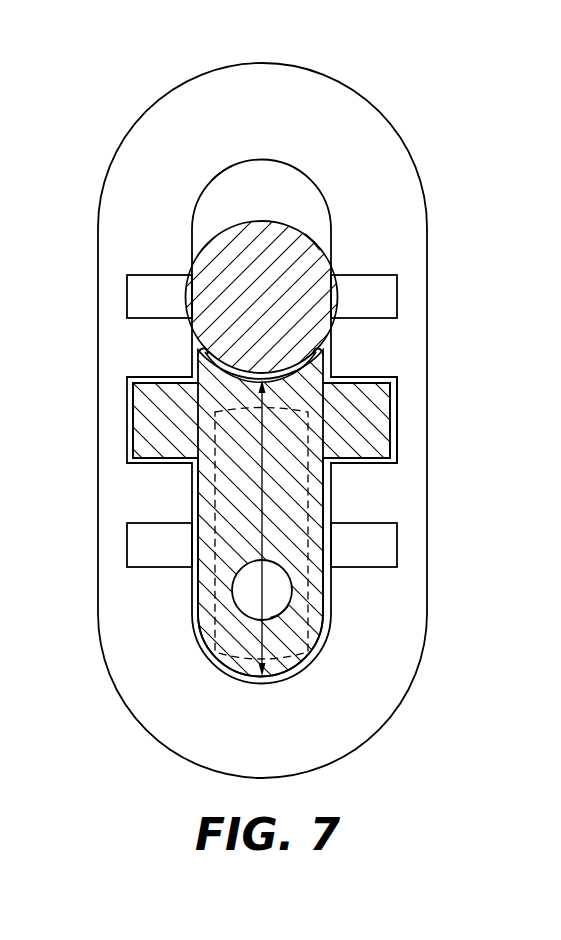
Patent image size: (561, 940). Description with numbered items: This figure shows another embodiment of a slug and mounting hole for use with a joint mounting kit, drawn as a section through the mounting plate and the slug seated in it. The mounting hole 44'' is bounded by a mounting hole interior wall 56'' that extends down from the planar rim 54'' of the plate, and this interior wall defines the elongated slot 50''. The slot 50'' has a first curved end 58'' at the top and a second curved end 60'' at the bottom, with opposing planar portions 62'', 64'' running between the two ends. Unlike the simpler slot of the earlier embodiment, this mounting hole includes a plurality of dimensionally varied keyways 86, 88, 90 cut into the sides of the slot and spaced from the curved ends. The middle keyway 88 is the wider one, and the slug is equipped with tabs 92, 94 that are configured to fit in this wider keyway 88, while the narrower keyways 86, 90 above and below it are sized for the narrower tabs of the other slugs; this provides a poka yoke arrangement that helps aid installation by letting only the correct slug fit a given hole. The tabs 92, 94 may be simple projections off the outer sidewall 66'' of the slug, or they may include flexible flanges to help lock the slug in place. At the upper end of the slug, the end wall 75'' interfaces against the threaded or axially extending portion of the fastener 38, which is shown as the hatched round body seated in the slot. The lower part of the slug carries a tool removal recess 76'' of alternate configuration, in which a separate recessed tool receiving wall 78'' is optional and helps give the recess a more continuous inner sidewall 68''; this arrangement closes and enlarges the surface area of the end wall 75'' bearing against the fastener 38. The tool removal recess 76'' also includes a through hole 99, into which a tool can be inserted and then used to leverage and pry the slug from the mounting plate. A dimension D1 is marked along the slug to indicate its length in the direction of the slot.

The planar rim 54'' is at (262, 389).
The elongated slot 50'' is at (262, 319).
The first curved end 58'' is at (208, 153).
The second curved end 60'' is at (282, 613).
The keyway 86 is at (398, 286).
The keyway 90 is at (398, 537).
The fastener 38 is at (218, 262).
The mounting hole 44'' is at (352, 215).
The recessed tool receiving wall 78'' is at (280, 520).
The end wall 75'' is at (171, 348).
The mounting hole interior wall 56'' is at (359, 348).
The tab 94 is at (150, 408).
The keyway 88 is at (399, 392).
The tab 92 is at (378, 438).
The planar portion 62'' is at (161, 446).
The planar portion 64'' is at (359, 498).
The outer sidewall 66'' is at (158, 568).
The inner sidewall 68'' is at (235, 650).
The through hole 99 is at (275, 572).
The tool removal recess 76'' is at (332, 631).
The dimension D1 is at (263, 502).